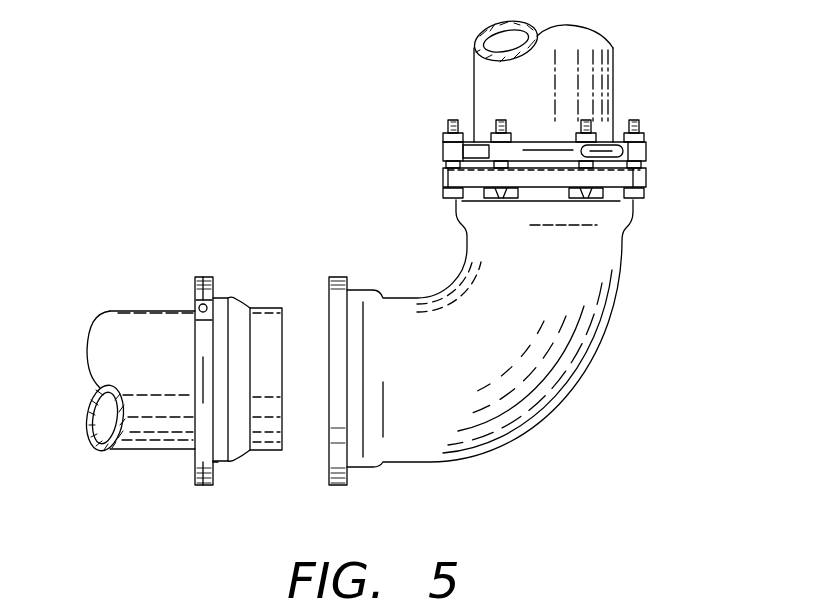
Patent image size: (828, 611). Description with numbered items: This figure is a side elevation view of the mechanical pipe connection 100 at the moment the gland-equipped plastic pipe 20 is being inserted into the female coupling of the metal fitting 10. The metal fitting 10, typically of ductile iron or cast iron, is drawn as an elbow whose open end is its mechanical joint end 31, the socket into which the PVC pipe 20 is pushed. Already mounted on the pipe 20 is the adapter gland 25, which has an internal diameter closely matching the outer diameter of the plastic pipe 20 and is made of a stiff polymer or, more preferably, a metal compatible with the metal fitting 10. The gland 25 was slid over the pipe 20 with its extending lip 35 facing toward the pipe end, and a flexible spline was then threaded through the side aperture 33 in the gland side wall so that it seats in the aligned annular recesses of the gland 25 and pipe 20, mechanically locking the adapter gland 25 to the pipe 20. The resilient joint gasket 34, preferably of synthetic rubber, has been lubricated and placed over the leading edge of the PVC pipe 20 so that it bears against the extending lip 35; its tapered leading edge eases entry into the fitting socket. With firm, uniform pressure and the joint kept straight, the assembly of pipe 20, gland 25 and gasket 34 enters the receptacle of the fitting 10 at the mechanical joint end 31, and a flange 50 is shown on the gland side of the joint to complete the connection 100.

The mechanical pipe connection 100 is at (742, 244).
The metal fitting 10 is at (523, 393).
The mechanical joint end 31 is at (337, 277).
The flange 50 is at (207, 275).
The adapter gland 25 is at (197, 297).
The side aperture 33 is at (195, 313).
The resilient joint gasket 34 is at (243, 308).
The extending lip 35 is at (218, 464).
The plastic pipe 20 is at (110, 420).